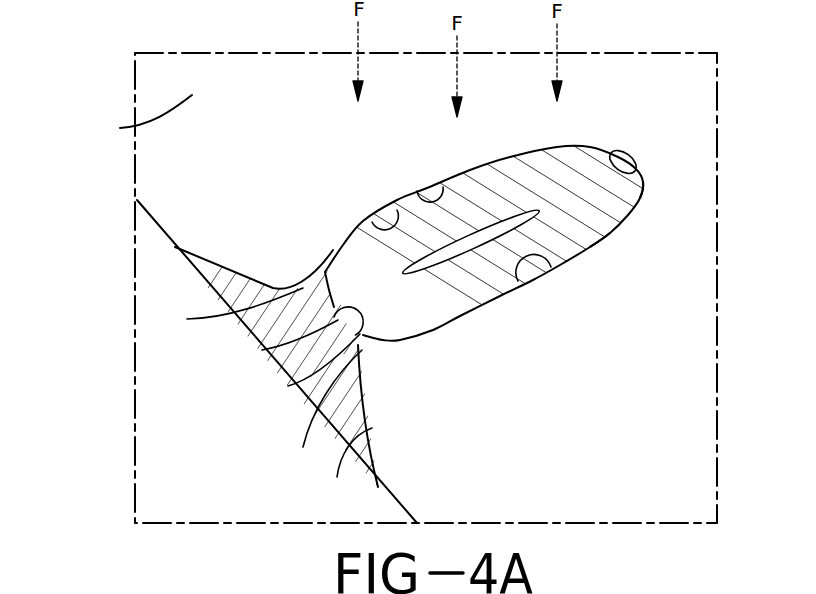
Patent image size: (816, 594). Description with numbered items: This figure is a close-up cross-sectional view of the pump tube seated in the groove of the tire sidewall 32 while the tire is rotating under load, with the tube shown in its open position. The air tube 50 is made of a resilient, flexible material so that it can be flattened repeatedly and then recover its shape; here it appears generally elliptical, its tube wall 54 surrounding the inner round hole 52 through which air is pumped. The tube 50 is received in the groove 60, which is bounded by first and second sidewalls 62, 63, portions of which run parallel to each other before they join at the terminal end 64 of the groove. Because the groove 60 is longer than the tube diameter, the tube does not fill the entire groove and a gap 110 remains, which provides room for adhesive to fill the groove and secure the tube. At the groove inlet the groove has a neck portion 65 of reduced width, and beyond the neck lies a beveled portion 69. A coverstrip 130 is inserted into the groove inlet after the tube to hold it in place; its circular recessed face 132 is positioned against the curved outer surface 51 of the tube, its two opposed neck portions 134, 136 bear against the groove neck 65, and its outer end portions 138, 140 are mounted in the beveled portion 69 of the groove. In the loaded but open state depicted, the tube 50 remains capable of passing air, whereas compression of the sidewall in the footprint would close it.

The tire sidewall 32 is at (120, 128).
The air tube 50 is at (482, 298).
The curved outer surface 51 is at (262, 350).
The inner round hole 52 is at (489, 232).
The tube wall 54 is at (601, 242).
The groove 60 is at (370, 222).
The first sidewall 62 is at (418, 200).
The second sidewall 63 is at (547, 259).
The terminal end 64 is at (613, 148).
The neck portion 65 is at (256, 385).
The beveled portion 69 is at (199, 254).
The gap 110 is at (641, 190).
The coverstrip 130 is at (294, 406).
The circular recessed face 132 is at (288, 386).
The neck portion 134 is at (300, 287).
The neck portion 136 is at (363, 343).
The outer end portion 138 is at (199, 253).
The outer end portion 140 is at (373, 453).